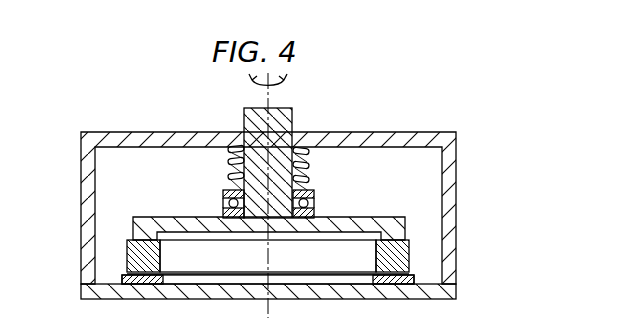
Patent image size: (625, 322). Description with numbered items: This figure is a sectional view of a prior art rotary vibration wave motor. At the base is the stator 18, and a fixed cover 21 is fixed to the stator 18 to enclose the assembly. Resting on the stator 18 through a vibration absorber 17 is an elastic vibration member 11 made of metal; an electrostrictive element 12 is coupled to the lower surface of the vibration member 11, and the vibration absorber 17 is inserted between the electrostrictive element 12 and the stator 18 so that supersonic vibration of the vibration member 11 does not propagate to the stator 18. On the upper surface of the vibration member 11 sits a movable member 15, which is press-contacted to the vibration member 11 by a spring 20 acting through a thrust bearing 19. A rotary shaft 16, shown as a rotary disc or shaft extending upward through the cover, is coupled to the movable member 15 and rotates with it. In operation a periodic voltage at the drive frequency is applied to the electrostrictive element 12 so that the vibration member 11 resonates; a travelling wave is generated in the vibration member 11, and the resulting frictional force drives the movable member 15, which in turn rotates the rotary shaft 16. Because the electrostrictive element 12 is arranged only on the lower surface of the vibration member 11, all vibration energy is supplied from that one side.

The rotary shaft 16 is at (292, 118).
The fixed cover 21 is at (448, 152).
The spring 20 is at (228, 157).
The thrust bearing 19 is at (223, 191).
The movable member 15 is at (404, 233).
The vibration member 11 is at (409, 258).
The electrostrictive element 12 is at (127, 273).
The vibration absorber 17 is at (413, 280).
The stator 18 is at (449, 291).